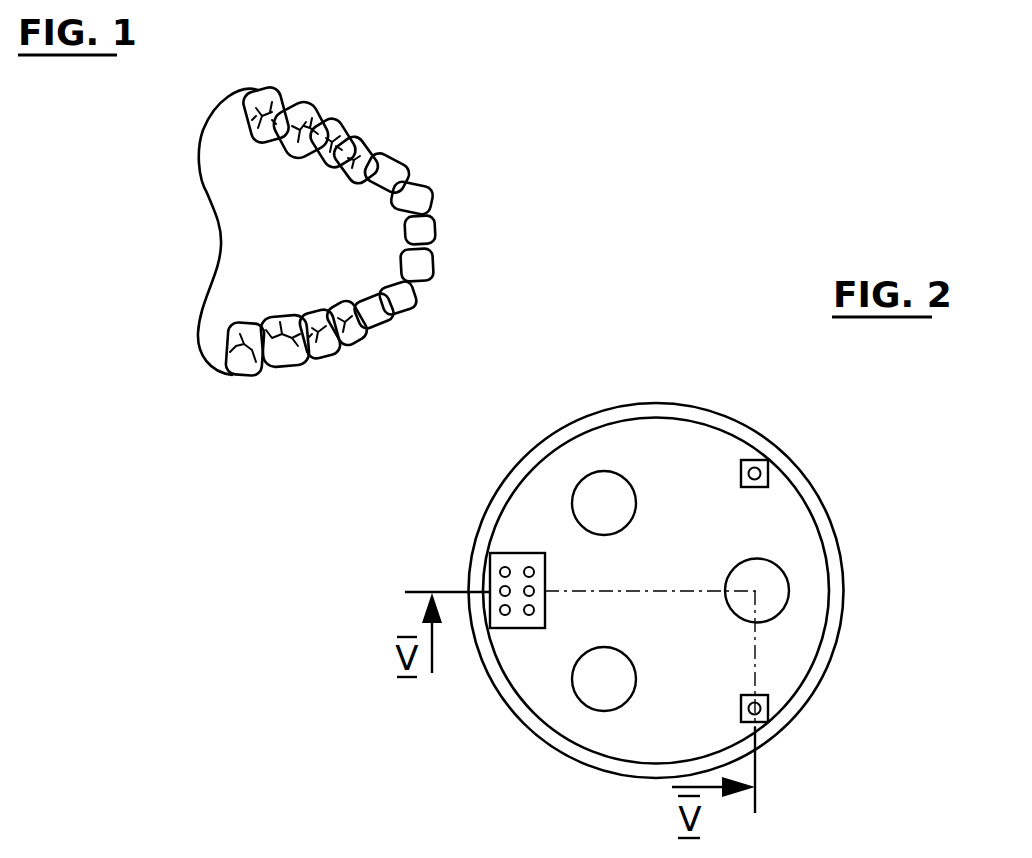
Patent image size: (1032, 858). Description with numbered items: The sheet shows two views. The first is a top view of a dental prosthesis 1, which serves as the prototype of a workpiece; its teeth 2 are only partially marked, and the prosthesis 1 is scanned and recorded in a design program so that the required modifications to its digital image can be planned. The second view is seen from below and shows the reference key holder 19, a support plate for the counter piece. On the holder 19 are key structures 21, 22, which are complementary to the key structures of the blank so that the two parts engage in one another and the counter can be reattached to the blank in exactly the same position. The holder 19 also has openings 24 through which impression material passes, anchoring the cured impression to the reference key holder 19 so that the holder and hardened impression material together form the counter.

In FIG. 1, the dental prosthesis 1 is at (392, 104).
In FIG. 1, the teeth 2 is at (343, 133).
In FIG. 2, the reference key holder 19 is at (800, 472).
In FIG. 2, the key structure 21 is at (497, 563).
In FIG. 2, the key structure 22 is at (757, 711).
In FIG. 2, the openings 24 is at (597, 488).